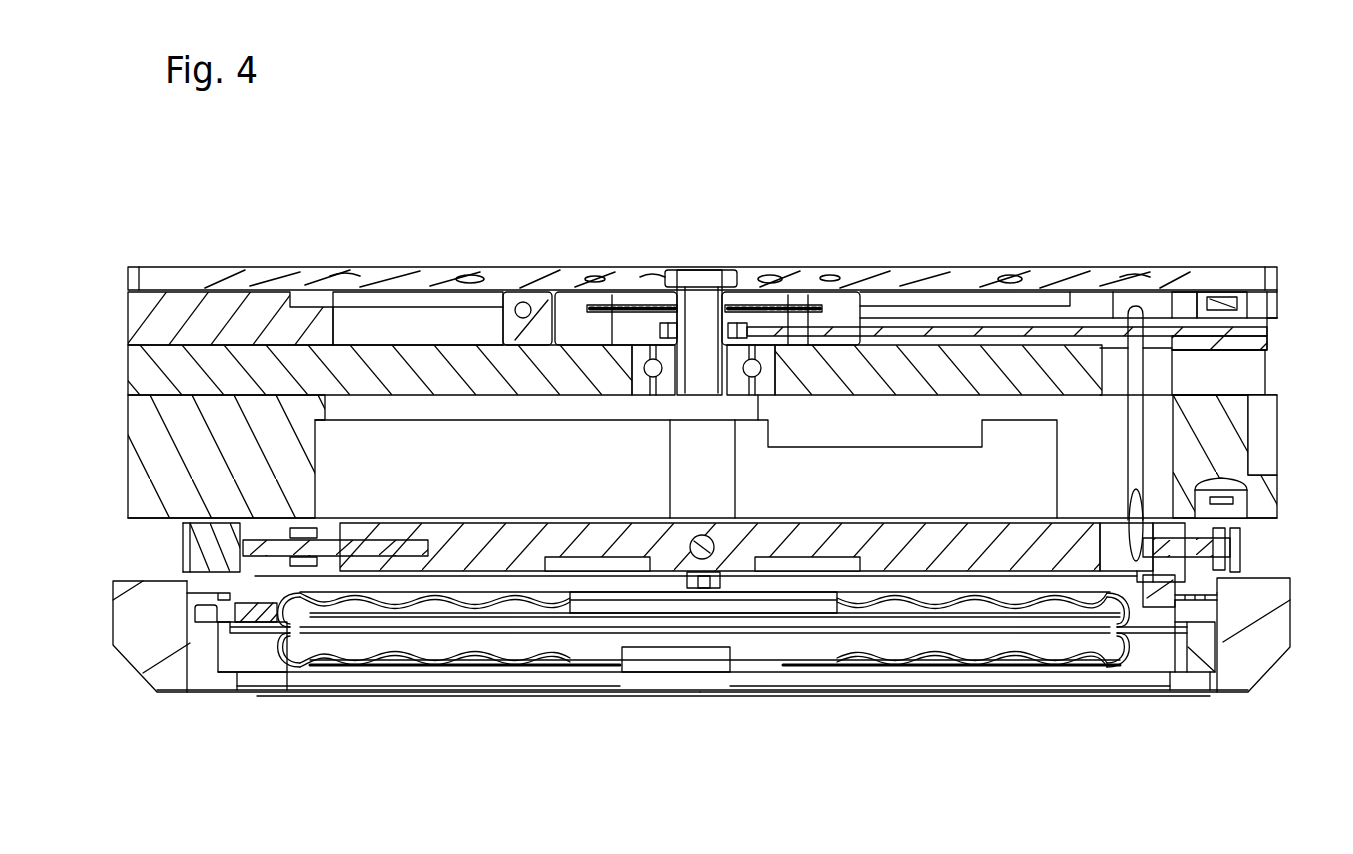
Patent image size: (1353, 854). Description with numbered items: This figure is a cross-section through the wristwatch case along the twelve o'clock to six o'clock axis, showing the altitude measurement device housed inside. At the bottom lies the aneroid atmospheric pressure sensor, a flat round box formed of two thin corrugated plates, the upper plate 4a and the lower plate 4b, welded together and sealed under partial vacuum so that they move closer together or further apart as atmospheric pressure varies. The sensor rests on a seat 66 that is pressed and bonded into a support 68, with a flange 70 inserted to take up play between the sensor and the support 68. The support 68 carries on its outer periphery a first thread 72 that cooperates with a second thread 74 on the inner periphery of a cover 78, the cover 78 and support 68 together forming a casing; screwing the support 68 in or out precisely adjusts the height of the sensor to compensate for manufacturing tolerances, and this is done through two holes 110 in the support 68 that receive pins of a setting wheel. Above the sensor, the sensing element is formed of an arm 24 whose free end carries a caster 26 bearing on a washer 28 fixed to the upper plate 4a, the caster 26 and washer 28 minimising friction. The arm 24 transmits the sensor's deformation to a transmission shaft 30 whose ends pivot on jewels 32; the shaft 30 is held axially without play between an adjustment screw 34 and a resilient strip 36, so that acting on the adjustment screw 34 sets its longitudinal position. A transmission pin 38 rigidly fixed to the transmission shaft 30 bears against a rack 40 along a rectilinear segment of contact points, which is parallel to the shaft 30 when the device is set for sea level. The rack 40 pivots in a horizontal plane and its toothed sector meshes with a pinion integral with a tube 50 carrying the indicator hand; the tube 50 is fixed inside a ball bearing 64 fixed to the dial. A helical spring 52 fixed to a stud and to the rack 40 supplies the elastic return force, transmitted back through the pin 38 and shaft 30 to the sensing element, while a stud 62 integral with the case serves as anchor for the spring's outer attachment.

The upper plate 4a is at (930, 602).
The lower plate 4b is at (440, 662).
The arm 24 is at (716, 580).
The caster 26 is at (705, 560).
The washer 28 is at (585, 600).
The transmission shaft 30 is at (520, 540).
The jewels 32 is at (318, 562).
The adjustment screw 34 is at (197, 557).
The resilient strip 36 is at (1235, 560).
The transmission pin 38 is at (1140, 378).
The rack 40 is at (843, 327).
The tube 50 is at (710, 285).
The helical spring 52 is at (648, 305).
The stud 62 is at (515, 300).
The ball bearing 64 is at (753, 360).
The seat 66 is at (635, 672).
The support 68 is at (1000, 672).
The flange 70 is at (190, 614).
The first thread 72 is at (1212, 674).
The second thread 74 is at (1220, 663).
The cover 78 is at (1258, 440).
The holes 110 is at (255, 690).